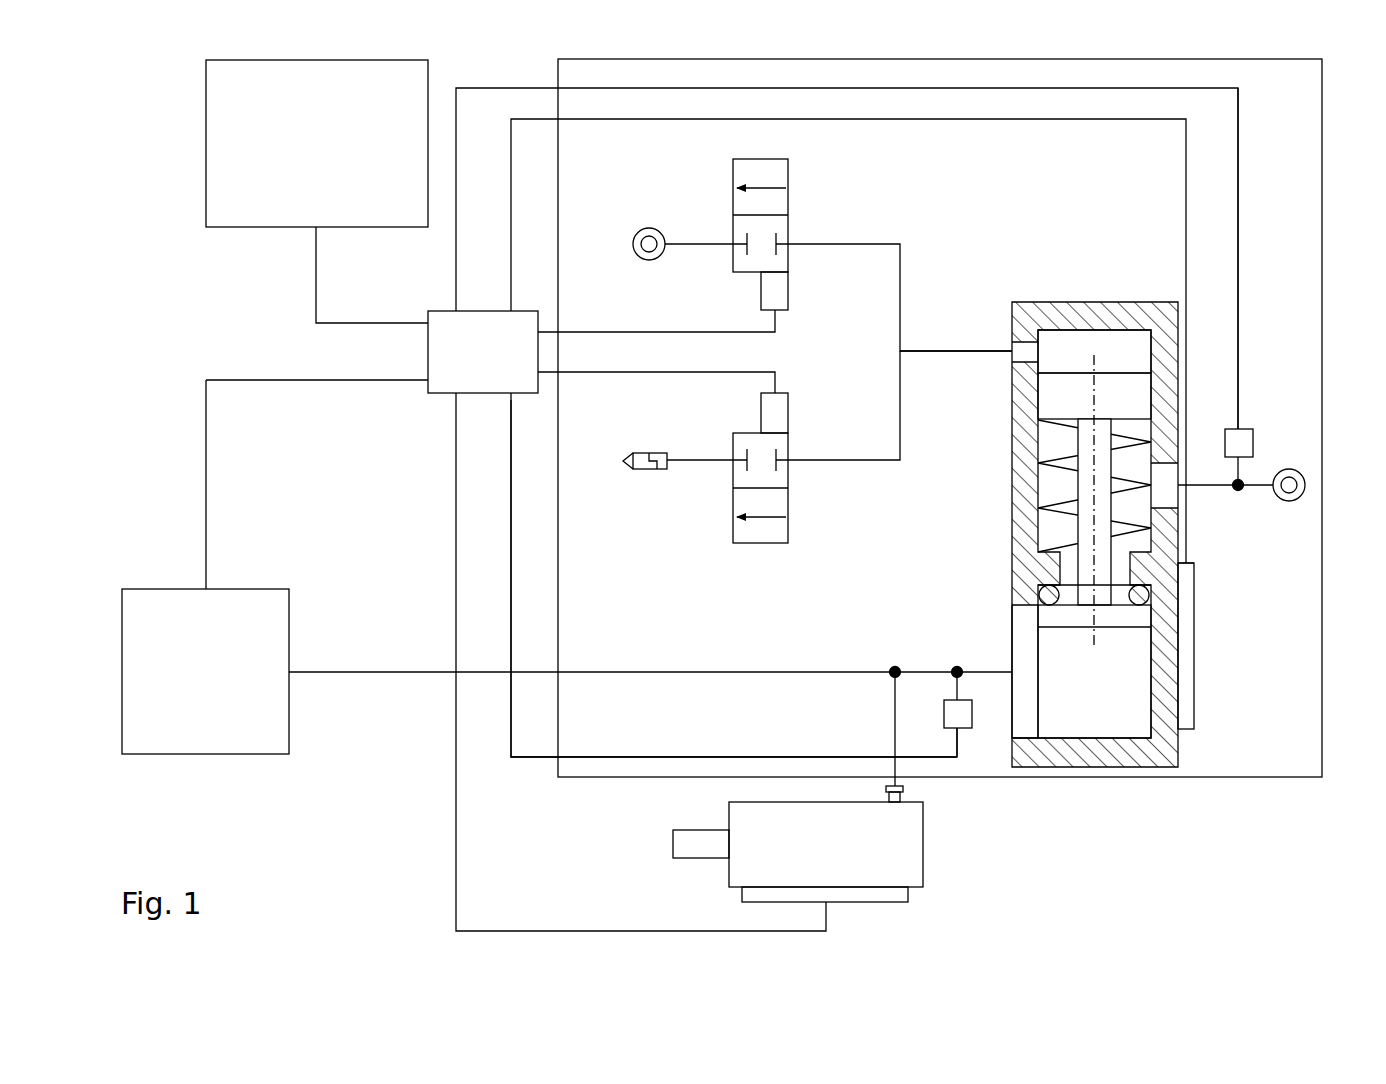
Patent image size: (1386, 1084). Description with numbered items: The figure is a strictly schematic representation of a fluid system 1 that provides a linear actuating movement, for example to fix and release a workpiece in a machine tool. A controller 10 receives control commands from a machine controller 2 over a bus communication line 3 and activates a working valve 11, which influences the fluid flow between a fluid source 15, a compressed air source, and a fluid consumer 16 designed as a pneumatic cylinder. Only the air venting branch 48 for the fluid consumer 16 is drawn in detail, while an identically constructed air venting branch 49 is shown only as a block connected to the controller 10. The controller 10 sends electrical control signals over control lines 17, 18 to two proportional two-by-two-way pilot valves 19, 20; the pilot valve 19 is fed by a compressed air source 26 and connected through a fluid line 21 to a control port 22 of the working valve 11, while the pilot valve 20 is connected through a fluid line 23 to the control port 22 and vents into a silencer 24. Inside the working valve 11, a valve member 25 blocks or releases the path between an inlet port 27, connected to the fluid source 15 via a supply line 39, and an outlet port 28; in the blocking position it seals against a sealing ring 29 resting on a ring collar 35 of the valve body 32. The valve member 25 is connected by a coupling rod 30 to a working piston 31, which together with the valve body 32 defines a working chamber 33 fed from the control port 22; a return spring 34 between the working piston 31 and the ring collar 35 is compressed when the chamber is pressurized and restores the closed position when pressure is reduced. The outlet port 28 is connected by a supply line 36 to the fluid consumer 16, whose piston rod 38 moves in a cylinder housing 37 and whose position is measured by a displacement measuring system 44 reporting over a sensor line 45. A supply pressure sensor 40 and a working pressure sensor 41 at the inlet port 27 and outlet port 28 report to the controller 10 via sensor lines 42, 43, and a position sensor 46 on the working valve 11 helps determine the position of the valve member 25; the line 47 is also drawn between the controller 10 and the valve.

The fluid system 1 is at (183, 313).
The machine controller 2 is at (317, 143).
The bus communication line 3 is at (316, 262).
The controller 10 is at (372, 450).
The working valve 11 is at (1122, 553).
The fluid source 15 is at (1298, 483).
The fluid consumer 16 is at (806, 873).
The control line 17 is at (681, 328).
The control line 18 is at (681, 375).
The pilot valve 19 is at (786, 201).
The pilot valve 20 is at (786, 499).
The fluid line 21 is at (862, 246).
The control port 22 is at (1010, 338).
The fluid line 23 is at (867, 460).
The silencer 24 is at (636, 470).
The valve member 25 is at (1160, 620).
The compressed air source 26 is at (649, 228).
The inlet port 27 is at (1170, 498).
The outlet port 28 is at (1025, 626).
The sealing ring 29 is at (1045, 562).
The coupling rod 30 is at (1085, 491).
The working piston 31 is at (1053, 395).
The valve body 32 is at (1113, 308).
The working chamber 33 is at (1062, 338).
The return spring 34 is at (1130, 432).
The ring collar 35 is at (1185, 578).
The supply line 36 is at (895, 688).
The cylinder housing 37 is at (826, 844).
The piston rod 38 is at (688, 842).
The supply line 39 is at (1262, 482).
The pressure sensor 40 is at (1247, 438).
The pressure sensor 41 is at (963, 718).
The sensor line 42 is at (1238, 190).
The sensor line 43 is at (530, 757).
The displacement measuring system 44 is at (897, 895).
The sensor line 45 is at (456, 510).
The position sensor 46 is at (1183, 686).
The signal line 47 is at (1186, 150).
The air venting branch 48 is at (1322, 643).
The air venting branch 49 is at (567, 671).